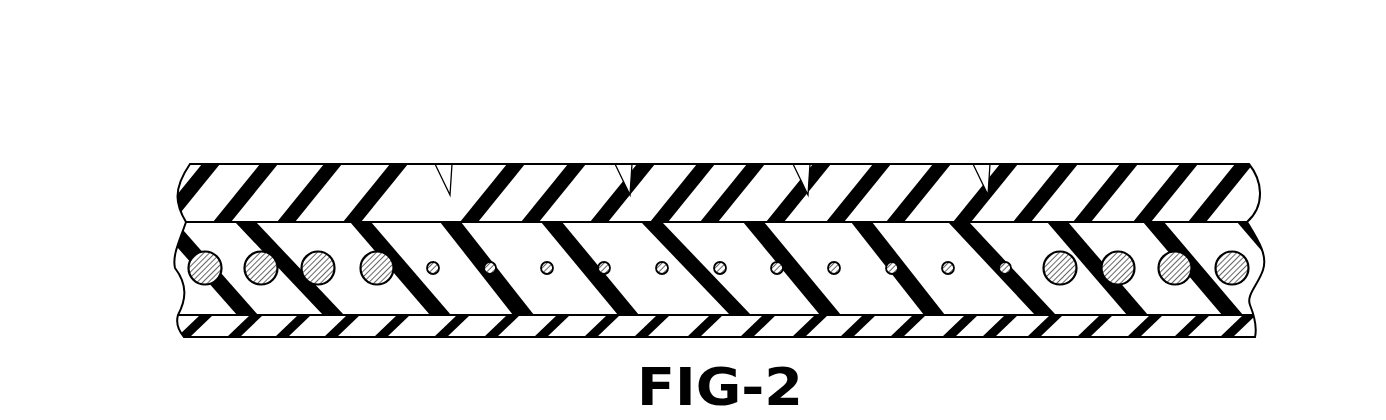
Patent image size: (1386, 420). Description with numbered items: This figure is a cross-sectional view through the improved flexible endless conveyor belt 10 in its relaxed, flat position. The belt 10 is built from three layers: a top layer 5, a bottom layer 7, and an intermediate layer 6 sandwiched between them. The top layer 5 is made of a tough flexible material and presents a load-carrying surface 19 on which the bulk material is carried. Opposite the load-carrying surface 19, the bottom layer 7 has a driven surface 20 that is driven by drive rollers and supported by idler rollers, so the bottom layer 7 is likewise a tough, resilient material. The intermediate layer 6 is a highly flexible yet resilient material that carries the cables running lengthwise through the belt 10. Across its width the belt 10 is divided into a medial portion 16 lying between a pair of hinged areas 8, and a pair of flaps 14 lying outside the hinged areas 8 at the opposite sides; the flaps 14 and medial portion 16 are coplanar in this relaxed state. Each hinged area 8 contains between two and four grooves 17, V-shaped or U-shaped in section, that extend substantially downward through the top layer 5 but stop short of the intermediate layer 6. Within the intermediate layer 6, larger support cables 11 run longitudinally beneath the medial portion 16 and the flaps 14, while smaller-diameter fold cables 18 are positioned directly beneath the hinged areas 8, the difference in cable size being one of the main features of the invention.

The flexible endless conveyor belt 10 is at (215, 114).
The hinged area 8 is at (702, 112).
The flap 14 is at (307, 158).
The medial portion 16 is at (1166, 156).
The groove 17 is at (450, 194).
The load-carrying surface 19 is at (1213, 166).
The top layer 5 is at (1260, 194).
The intermediate layer 6 is at (1250, 240).
The support cable 11 is at (1238, 272).
The fold cable 18 is at (551, 275).
The bottom layer 7 is at (1216, 348).
The driven surface 20 is at (1028, 338).